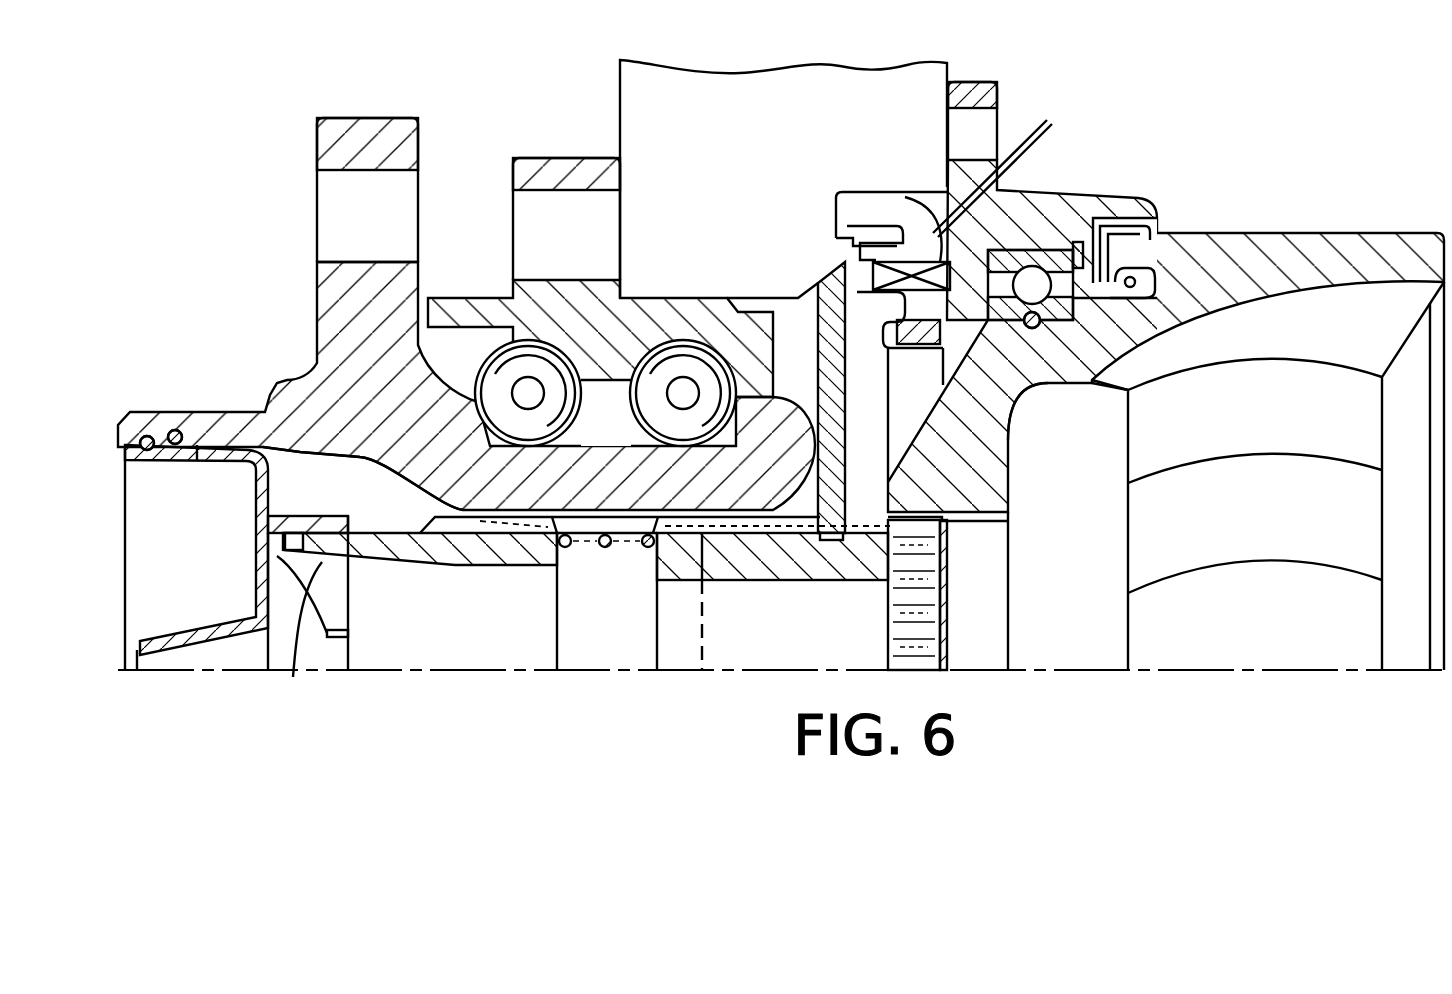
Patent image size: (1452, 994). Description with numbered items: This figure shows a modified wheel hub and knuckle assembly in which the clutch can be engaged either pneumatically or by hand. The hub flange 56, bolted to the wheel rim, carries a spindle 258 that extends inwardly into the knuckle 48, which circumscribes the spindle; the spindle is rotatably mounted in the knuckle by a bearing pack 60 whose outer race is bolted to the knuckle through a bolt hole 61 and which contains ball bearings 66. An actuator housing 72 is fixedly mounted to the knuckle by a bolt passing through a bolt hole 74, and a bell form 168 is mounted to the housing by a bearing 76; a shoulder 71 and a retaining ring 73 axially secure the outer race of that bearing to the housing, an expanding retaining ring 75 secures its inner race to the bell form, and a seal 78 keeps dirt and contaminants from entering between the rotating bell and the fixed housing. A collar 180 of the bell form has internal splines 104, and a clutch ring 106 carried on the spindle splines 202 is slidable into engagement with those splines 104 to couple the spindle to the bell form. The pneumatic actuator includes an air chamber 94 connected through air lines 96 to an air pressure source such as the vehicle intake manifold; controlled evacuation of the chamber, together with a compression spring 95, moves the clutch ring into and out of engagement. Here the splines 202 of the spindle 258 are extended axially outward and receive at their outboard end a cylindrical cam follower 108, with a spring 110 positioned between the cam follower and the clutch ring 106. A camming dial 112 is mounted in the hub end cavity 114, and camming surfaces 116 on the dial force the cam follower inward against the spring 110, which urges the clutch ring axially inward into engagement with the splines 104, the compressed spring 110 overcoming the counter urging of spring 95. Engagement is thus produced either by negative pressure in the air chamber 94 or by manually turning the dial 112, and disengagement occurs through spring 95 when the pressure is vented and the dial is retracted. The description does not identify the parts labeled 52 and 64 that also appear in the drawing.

The knuckle 48 is at (648, 101).
The housing 52 is at (1317, 250).
The hub flange 56 is at (333, 292).
The bearing pack 60 is at (513, 130).
The bolt hole 61 is at (532, 215).
The bearing race 64 is at (520, 310).
The ball bearings 66 is at (672, 387).
The shoulder 71 is at (1020, 250).
The actuator housing 72 is at (1132, 207).
The retaining ring 73 is at (1078, 242).
The bolt hole 74 is at (985, 125).
The expanding retaining ring 75 is at (1040, 328).
The bearing 76 is at (1042, 319).
The seal 78 is at (1128, 245).
The air chamber 94 is at (918, 245).
The compression spring 95 is at (914, 255).
The air lines 96 is at (1040, 128).
The internal splines 104 is at (910, 522).
The clutch ring 106 is at (778, 558).
The cylindrical cam follower 108 is at (475, 543).
The spring 110 is at (560, 547).
The camming dial 112 is at (263, 527).
The hub end cavity 114 is at (303, 457).
The camming surfaces 116 is at (294, 672).
The bell form 168 is at (1072, 347).
The collar 180 is at (980, 492).
The splines 202 is at (637, 523).
The spindle 258 is at (528, 499).